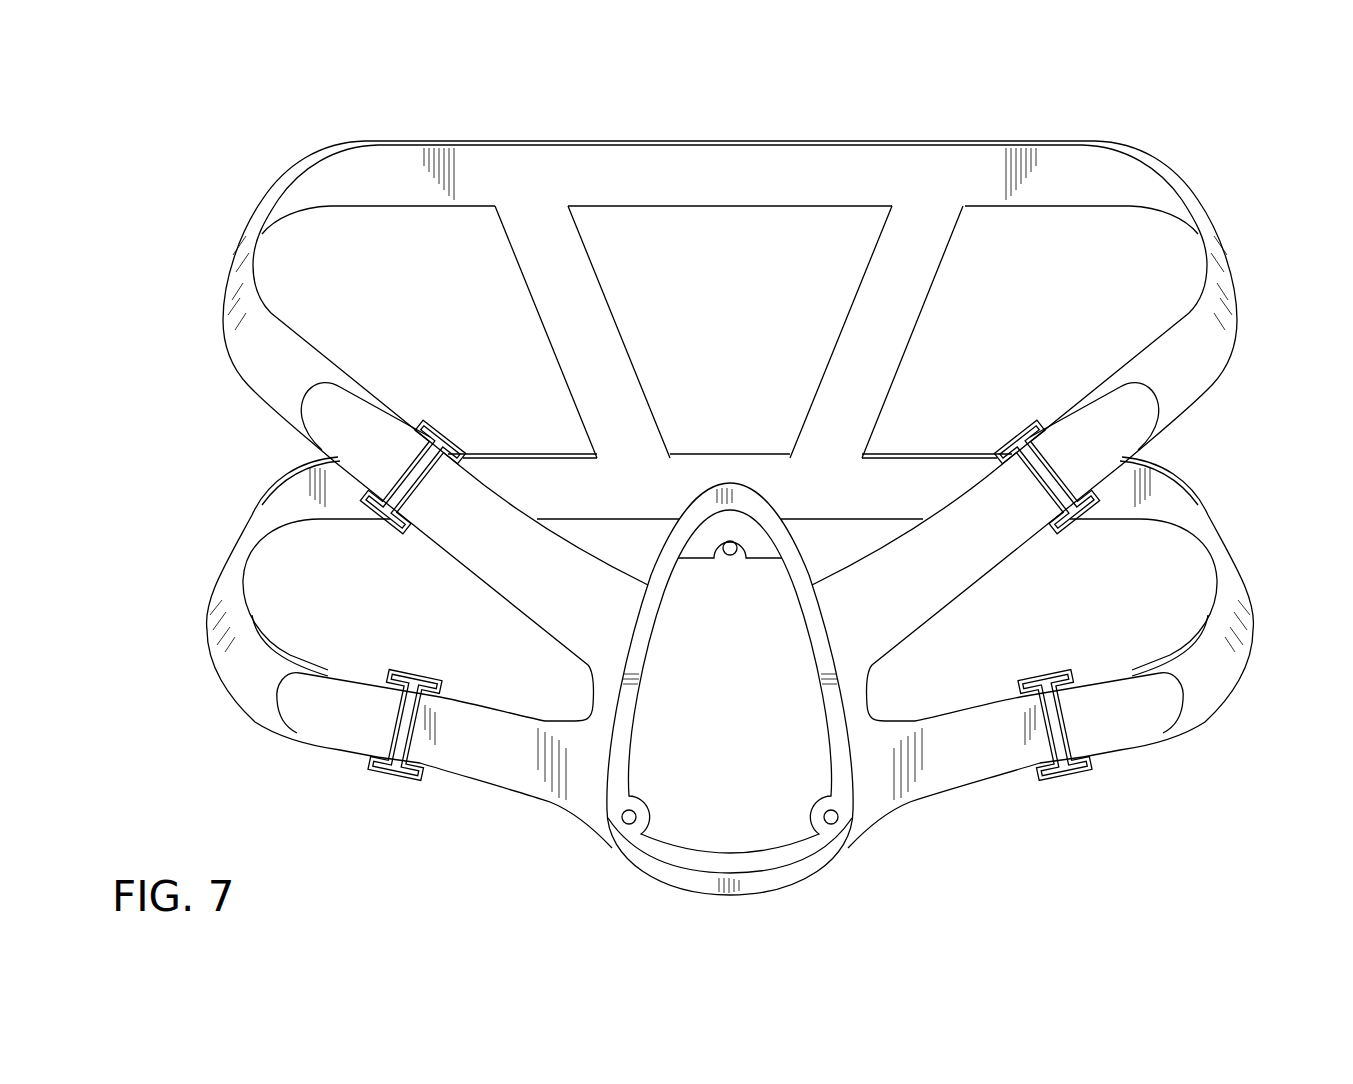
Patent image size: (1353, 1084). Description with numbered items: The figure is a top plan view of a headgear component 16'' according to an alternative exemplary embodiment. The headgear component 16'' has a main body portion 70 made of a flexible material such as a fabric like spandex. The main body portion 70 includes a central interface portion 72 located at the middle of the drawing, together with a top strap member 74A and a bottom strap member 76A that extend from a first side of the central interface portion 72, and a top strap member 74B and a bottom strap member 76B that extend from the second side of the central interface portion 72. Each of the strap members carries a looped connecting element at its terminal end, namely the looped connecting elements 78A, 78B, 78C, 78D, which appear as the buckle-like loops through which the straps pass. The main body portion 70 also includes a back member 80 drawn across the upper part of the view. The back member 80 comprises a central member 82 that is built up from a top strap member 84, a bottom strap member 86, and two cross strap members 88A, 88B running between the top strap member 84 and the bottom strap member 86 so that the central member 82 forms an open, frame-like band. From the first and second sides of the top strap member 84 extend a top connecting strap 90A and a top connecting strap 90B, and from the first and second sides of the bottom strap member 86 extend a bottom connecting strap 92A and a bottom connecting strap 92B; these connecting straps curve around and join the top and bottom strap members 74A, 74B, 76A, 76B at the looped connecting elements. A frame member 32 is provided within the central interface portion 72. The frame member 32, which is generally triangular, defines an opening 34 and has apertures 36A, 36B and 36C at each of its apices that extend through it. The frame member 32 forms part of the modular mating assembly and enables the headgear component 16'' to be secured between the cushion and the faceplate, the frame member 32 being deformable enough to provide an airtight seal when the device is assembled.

The headgear component 16'' is at (728, 496).
The back member 80 is at (945, 300).
The central member 82 is at (722, 140).
The top strap member 84 is at (703, 188).
The bottom strap member 86 is at (704, 454).
The cross strap member 88A is at (618, 357).
The cross strap member 88B is at (842, 358).
The top connecting strap 90A is at (228, 278).
The top connecting strap 90B is at (1228, 278).
The top strap member 74A is at (530, 573).
The top strap member 74B is at (970, 560).
The looped connecting element 78A is at (440, 446).
The looped connecting element 78B is at (390, 775).
The looped connecting element 78C is at (1012, 443).
The looped connecting element 78D is at (1087, 767).
The main body portion 70 is at (578, 797).
The bottom connecting strap 92A is at (207, 582).
The bottom connecting strap 92B is at (1235, 660).
The bottom strap member 76A is at (510, 755).
The bottom strap member 76B is at (967, 768).
The frame member 32 is at (888, 678).
The central interface portion 72 is at (795, 553).
The opening 34 is at (750, 728).
The aperture 36A is at (727, 556).
The aperture 36B is at (835, 825).
The aperture 36C is at (627, 825).